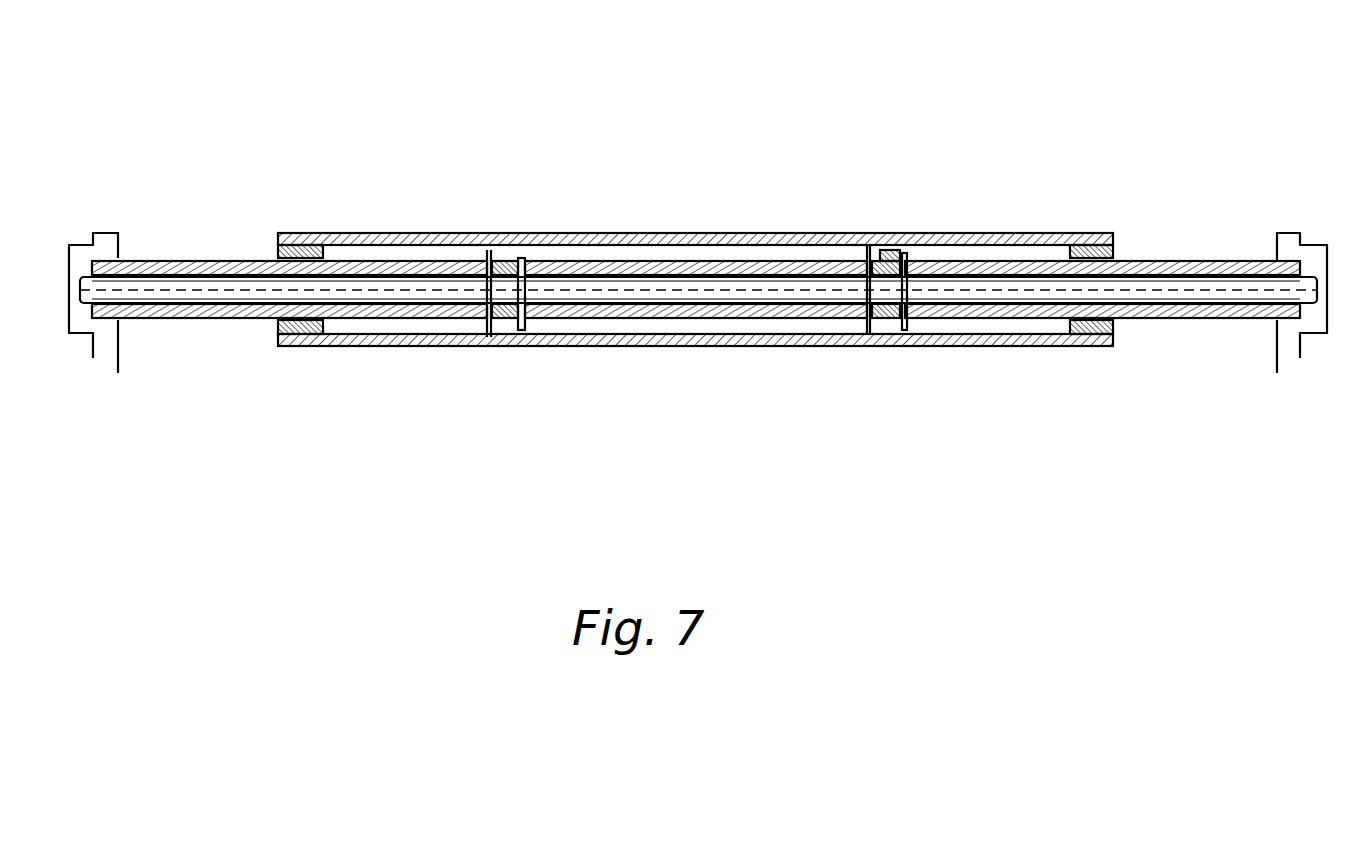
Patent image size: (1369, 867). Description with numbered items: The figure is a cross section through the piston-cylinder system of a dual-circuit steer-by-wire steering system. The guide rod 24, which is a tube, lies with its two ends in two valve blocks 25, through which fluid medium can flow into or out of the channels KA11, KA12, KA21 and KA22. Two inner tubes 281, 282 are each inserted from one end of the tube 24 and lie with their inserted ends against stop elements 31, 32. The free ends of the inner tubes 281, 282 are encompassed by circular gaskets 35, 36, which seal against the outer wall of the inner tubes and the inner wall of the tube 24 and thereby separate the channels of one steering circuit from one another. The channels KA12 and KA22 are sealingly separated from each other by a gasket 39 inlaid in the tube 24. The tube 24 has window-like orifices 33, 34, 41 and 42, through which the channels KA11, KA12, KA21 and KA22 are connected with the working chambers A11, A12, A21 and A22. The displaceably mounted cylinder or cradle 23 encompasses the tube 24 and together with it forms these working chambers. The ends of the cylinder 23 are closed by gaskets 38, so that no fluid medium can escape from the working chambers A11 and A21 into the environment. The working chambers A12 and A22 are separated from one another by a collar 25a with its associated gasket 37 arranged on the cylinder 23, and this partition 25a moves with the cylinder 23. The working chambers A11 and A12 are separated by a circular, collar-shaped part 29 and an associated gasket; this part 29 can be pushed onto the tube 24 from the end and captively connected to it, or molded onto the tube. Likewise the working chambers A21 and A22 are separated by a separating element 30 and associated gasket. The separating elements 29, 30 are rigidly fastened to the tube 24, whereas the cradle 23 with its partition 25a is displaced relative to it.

The cradle 23 is at (835, 350).
The guide rod 24 is at (178, 318).
The valve blocks 25 is at (75, 322).
The collar 25a is at (692, 348).
The inner tube 281 is at (205, 285).
The inner tube 282 is at (1162, 262).
The collar-shaped part 29 is at (512, 245).
The separating element 30 is at (890, 245).
The stop element 31 is at (540, 262).
The stop element 32 is at (867, 280).
The window-like orifice 33 is at (525, 345).
The window-like orifice 34 is at (465, 240).
The circular gasket 35 is at (490, 337).
The circular gasket 36 is at (883, 330).
The gasket 37 is at (692, 232).
The gaskets 38 is at (303, 250).
The gasket 39 is at (822, 285).
The window-like orifice 41 is at (912, 245).
The window-like orifice 42 is at (862, 300).
The working chamber A11 is at (403, 330).
The working chamber A12 is at (565, 345).
The working chamber A21 is at (985, 232).
The working chamber A22 is at (790, 233).
The channel KA11 is at (272, 345).
The channel KA12 is at (262, 276).
The channel KA21 is at (1048, 232).
The channel KA22 is at (1040, 345).